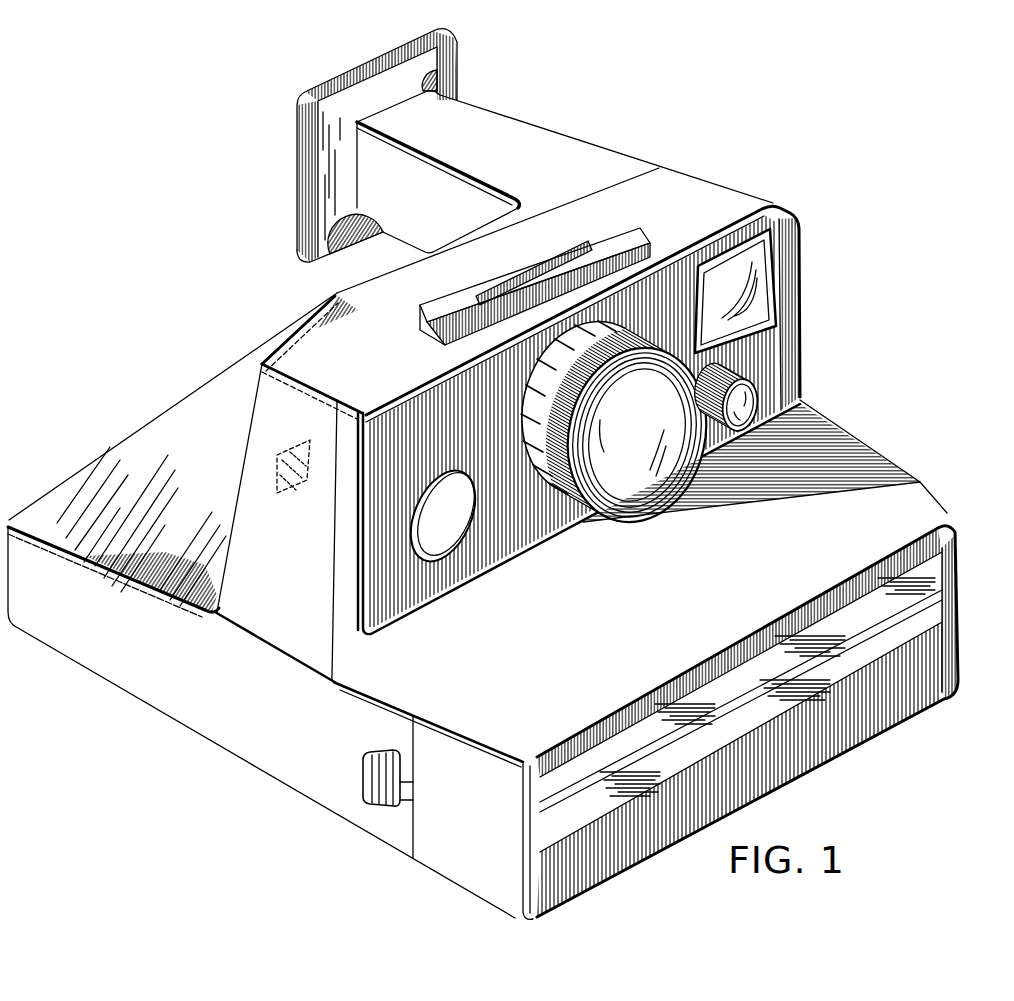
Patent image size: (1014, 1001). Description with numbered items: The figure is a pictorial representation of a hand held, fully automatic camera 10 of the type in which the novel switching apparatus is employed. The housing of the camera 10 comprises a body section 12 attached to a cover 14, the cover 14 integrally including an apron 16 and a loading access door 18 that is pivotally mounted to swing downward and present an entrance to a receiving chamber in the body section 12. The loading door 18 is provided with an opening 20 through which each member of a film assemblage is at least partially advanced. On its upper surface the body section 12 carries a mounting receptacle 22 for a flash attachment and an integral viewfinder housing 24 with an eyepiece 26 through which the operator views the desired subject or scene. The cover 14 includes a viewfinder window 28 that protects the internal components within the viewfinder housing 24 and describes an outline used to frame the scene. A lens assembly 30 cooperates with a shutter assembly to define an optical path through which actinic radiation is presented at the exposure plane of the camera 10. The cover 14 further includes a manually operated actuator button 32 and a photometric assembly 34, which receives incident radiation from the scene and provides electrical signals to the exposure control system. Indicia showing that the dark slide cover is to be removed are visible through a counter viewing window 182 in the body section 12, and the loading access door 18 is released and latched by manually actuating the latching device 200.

The camera 10 is at (848, 414).
The body section 12 is at (268, 678).
The cover 14 is at (799, 337).
The apron 16 is at (666, 639).
The loading access door 18 is at (473, 833).
The opening 20 is at (937, 600).
The mounting receptacle 22 is at (608, 233).
The viewfinder housing 24 is at (490, 110).
The eyepiece 26 is at (445, 50).
The viewfinder window 28 is at (763, 286).
The lens assembly 30 is at (607, 524).
The actuator button 32 is at (440, 542).
The photometric assembly 34 is at (763, 393).
The counter viewing window 182 is at (284, 487).
The latching device 200 is at (372, 803).